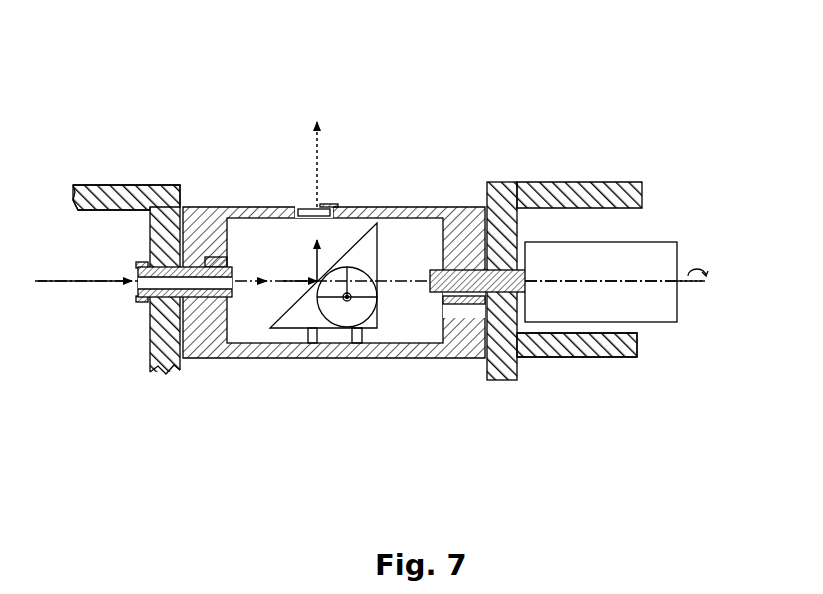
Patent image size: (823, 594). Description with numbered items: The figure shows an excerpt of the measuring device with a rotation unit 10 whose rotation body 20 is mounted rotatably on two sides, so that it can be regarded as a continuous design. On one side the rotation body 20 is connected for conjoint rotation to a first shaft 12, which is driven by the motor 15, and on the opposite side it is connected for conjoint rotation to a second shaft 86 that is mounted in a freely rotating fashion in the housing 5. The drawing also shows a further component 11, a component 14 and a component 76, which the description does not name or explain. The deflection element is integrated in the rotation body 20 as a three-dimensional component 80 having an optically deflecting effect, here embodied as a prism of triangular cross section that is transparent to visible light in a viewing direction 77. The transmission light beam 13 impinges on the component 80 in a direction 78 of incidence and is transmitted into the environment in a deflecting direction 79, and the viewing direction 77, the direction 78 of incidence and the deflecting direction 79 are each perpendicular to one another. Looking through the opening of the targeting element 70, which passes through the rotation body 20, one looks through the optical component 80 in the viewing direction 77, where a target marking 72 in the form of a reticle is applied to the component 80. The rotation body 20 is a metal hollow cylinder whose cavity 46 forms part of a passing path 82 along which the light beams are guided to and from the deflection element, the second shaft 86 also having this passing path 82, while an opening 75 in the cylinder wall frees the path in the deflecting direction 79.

The housing 5 is at (98, 187).
The rotation unit 10 is at (463, 127).
The drive motor 11 is at (657, 280).
The first shaft 12 is at (520, 353).
The transmission light beam 13 is at (292, 279).
The mounting plate 14 is at (605, 357).
The motor 15 is at (635, 295).
The rotation body 20 is at (432, 360).
The cavity 46 is at (420, 334).
The targeting element 70 is at (397, 240).
The target marking 72 is at (397, 240).
The opening 75 is at (328, 210).
The support feet 76 is at (357, 345).
The viewing direction 77 is at (346, 297).
The direction of incidence 78 is at (232, 208).
The deflecting direction 79 is at (317, 153).
The three-dimensional optically deflecting component 80 is at (295, 318).
The passing path 82 is at (112, 268).
The second shaft 86 is at (142, 298).